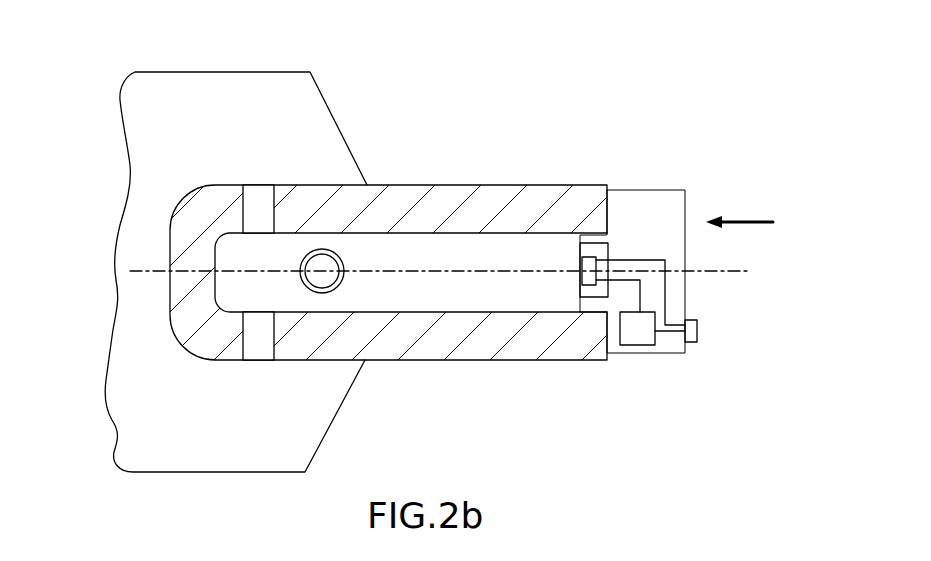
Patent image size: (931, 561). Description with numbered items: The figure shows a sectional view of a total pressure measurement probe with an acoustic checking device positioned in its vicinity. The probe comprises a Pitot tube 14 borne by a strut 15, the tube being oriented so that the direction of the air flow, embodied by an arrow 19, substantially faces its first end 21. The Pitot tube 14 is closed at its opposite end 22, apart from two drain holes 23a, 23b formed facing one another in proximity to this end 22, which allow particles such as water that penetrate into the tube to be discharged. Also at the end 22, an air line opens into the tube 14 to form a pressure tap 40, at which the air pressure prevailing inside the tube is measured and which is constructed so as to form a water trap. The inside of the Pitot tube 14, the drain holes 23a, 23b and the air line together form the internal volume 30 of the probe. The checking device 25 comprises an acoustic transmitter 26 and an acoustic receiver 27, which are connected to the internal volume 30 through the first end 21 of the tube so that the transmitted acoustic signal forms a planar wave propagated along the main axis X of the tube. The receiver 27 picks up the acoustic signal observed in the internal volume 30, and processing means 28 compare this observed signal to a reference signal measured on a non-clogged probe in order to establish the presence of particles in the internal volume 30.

The Pitot tube 14 is at (420, 186).
The strut 15 is at (235, 431).
The arrow 19 is at (745, 222).
The first end 21 is at (571, 177).
The end 22 is at (219, 172).
The drain hole 23a is at (256, 195).
The drain hole 23b is at (254, 348).
The checking device 25 is at (647, 190).
The transmitter 26 is at (585, 265).
The receiver 27 is at (588, 290).
The processing means 28 is at (652, 340).
The internal volume 30 is at (532, 262).
The pressure tap 40 is at (345, 259).
The main axis X is at (750, 272).